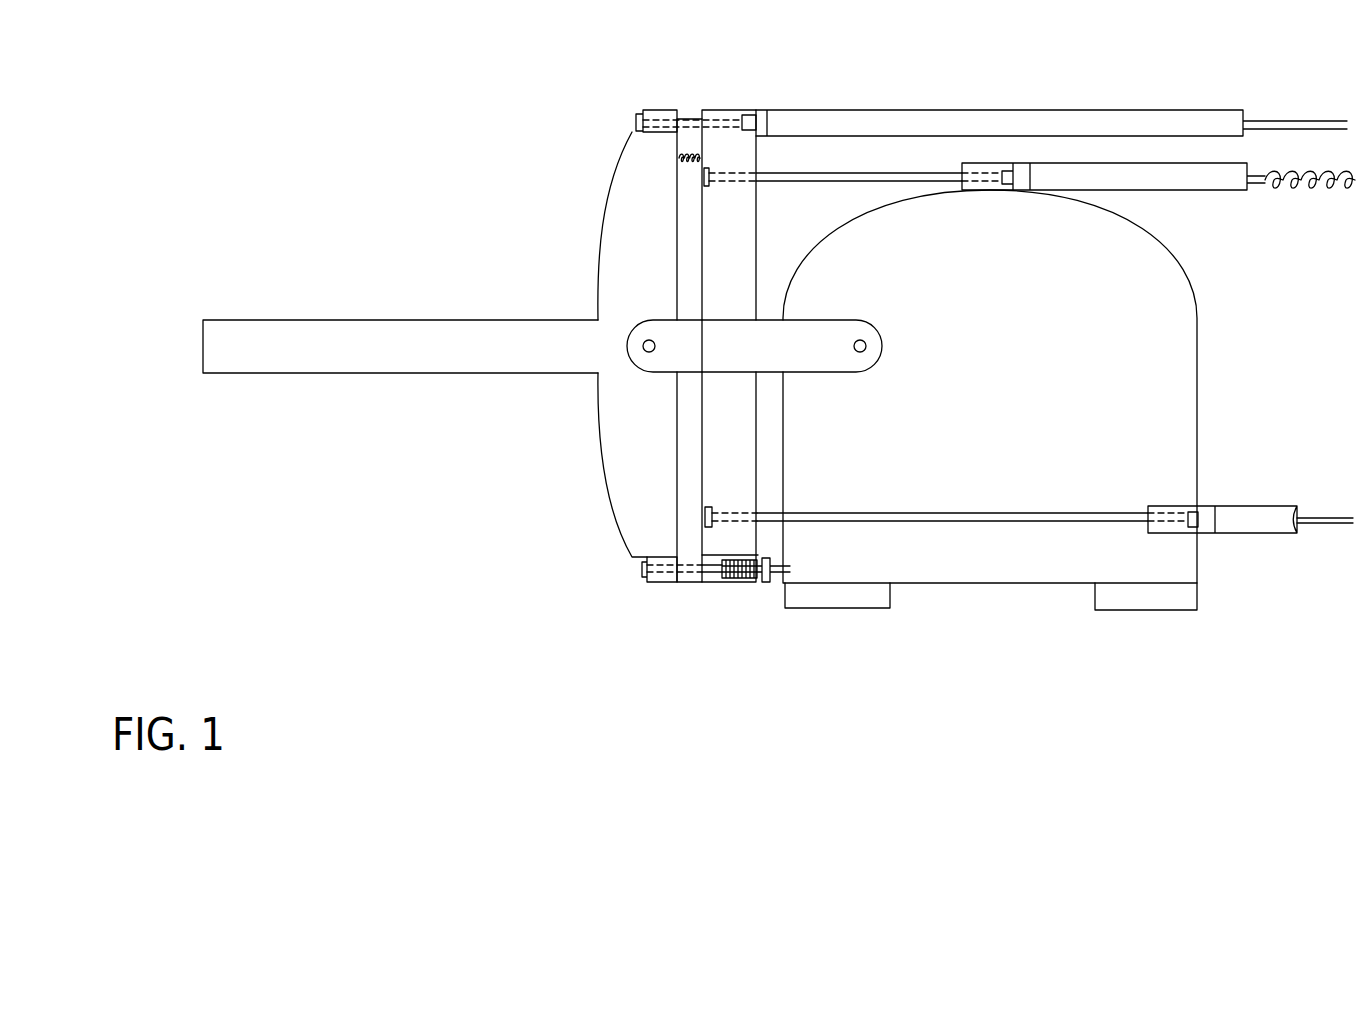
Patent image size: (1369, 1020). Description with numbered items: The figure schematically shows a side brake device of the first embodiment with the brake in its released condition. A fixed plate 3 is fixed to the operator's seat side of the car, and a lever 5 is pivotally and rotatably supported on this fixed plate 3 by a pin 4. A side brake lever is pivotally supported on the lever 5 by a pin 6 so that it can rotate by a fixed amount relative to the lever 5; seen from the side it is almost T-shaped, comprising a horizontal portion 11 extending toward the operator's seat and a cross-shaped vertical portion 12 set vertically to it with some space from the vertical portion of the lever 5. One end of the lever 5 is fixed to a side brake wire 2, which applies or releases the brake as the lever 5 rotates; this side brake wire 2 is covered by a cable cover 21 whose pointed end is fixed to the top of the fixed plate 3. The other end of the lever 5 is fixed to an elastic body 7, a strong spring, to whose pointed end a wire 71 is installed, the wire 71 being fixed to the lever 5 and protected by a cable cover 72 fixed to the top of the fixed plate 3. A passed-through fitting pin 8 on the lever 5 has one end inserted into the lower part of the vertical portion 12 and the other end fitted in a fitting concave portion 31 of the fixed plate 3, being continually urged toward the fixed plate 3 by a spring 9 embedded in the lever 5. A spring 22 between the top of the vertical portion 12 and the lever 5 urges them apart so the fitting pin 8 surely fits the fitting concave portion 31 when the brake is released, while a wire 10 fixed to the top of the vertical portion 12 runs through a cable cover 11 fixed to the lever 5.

The side brake wire 2 is at (1335, 530).
The fixed plate 3 is at (1190, 350).
The pin 4 is at (866, 344).
The lever 5 is at (712, 474).
The pin 6 is at (645, 345).
The elastic body 7 is at (1328, 192).
The fitting pin 8 is at (690, 582).
The spring 9 is at (742, 582).
The wire 10 is at (688, 119).
The horizontal portion 11 is at (960, 112).
The vertical portion 12 is at (598, 468).
The cable cover 21 is at (1257, 533).
The spring 22 is at (677, 155).
The fitting concave portion 31 is at (790, 568).
The wire 71 is at (844, 170).
The cable cover 72 is at (1200, 187).